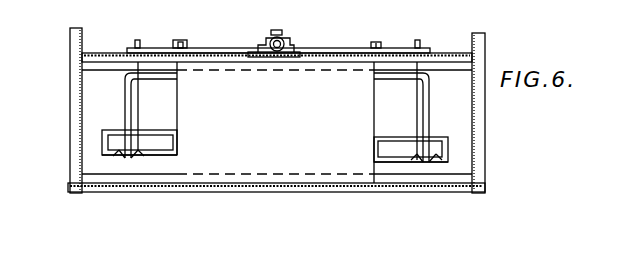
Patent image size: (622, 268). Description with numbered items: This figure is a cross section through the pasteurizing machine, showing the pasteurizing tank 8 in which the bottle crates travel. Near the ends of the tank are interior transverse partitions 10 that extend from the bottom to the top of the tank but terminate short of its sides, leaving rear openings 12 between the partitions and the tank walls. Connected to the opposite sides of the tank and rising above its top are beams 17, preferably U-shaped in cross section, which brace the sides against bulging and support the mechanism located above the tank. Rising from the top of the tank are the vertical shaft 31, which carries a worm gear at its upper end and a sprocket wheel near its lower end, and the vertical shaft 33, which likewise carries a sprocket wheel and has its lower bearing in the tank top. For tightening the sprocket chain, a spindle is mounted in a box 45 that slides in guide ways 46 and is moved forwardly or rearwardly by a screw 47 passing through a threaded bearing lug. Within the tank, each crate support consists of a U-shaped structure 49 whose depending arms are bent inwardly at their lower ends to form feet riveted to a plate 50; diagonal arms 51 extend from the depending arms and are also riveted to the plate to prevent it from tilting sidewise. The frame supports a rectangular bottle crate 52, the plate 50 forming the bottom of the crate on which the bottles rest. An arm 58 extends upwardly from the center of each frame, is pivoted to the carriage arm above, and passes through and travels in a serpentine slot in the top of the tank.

The pasteurizing tank 8 is at (80, 115).
The interior transverse partition 10 is at (273, 176).
The rear opening 12 is at (97, 129).
The beam 17 is at (74, 79).
The vertical shaft 31 is at (182, 41).
The vertical shaft 33 is at (375, 42).
The box 45 is at (288, 57).
The guide way 46 is at (258, 57).
The screw 47 is at (278, 55).
The U-shaped structure 49 is at (125, 114).
The plate 50 is at (158, 157).
The diagonal arm 51 is at (117, 150).
The rectangular bottle crate 52 is at (155, 138).
The arm 58 is at (140, 41).